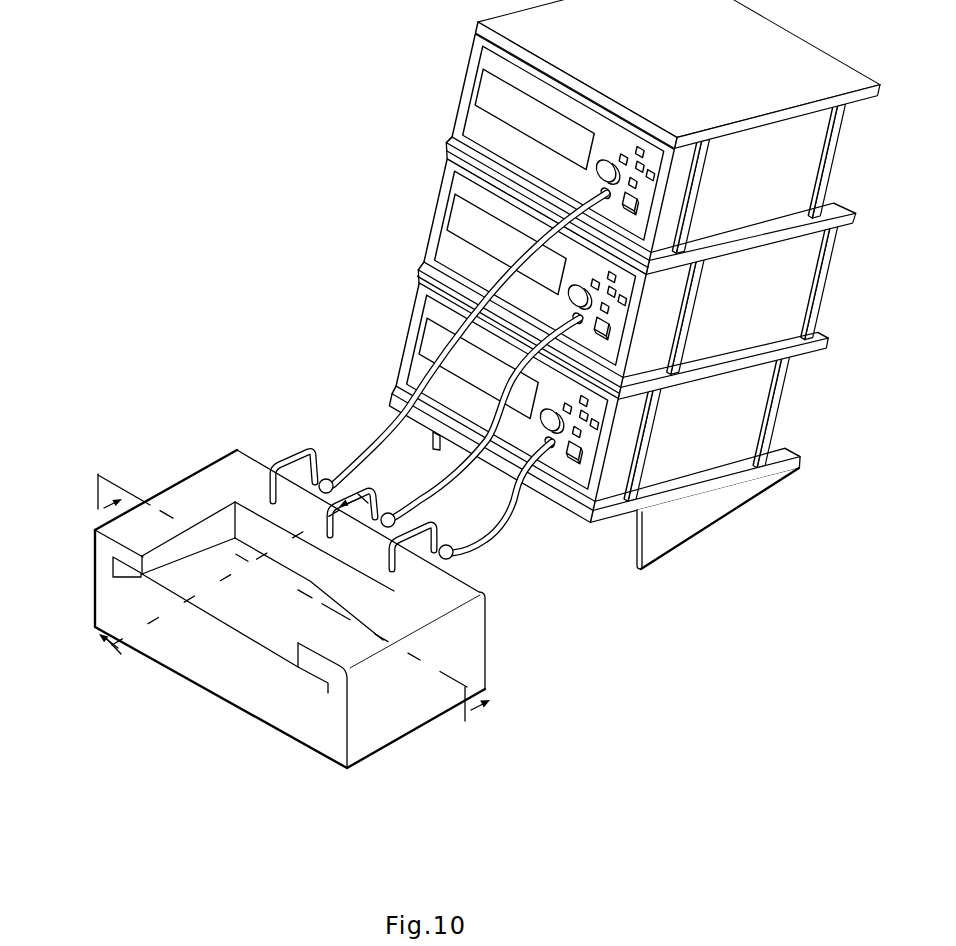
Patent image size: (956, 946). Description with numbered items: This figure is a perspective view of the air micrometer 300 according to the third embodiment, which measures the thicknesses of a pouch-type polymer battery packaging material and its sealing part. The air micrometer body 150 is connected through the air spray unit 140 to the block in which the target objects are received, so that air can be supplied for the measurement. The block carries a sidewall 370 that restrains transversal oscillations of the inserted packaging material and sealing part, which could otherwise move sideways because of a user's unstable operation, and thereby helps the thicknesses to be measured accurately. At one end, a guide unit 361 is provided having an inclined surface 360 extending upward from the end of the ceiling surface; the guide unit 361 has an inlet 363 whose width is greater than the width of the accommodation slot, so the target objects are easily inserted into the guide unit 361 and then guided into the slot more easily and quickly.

The air micrometer 300 is at (450, 384).
The air micrometer body 150 is at (438, 212).
The air spray unit 140 is at (456, 555).
The sidewall 370 is at (298, 609).
The inclined surface 360 is at (189, 557).
The guide unit 361 is at (103, 551).
The inlet 363 is at (124, 579).